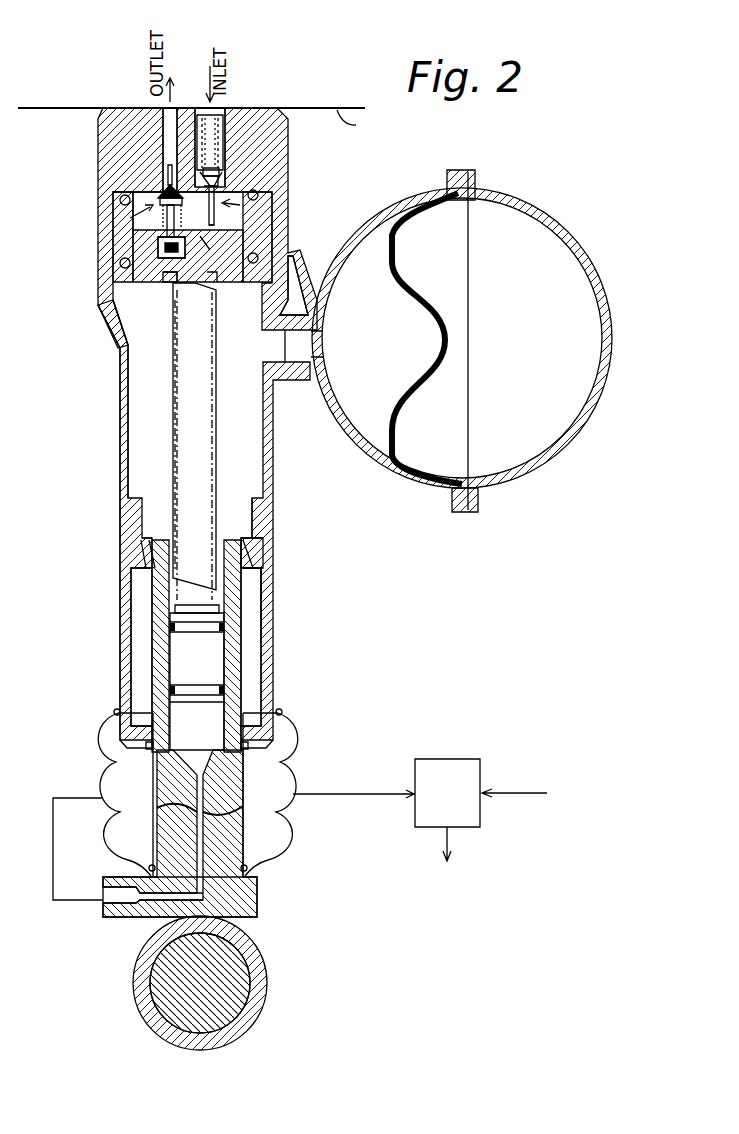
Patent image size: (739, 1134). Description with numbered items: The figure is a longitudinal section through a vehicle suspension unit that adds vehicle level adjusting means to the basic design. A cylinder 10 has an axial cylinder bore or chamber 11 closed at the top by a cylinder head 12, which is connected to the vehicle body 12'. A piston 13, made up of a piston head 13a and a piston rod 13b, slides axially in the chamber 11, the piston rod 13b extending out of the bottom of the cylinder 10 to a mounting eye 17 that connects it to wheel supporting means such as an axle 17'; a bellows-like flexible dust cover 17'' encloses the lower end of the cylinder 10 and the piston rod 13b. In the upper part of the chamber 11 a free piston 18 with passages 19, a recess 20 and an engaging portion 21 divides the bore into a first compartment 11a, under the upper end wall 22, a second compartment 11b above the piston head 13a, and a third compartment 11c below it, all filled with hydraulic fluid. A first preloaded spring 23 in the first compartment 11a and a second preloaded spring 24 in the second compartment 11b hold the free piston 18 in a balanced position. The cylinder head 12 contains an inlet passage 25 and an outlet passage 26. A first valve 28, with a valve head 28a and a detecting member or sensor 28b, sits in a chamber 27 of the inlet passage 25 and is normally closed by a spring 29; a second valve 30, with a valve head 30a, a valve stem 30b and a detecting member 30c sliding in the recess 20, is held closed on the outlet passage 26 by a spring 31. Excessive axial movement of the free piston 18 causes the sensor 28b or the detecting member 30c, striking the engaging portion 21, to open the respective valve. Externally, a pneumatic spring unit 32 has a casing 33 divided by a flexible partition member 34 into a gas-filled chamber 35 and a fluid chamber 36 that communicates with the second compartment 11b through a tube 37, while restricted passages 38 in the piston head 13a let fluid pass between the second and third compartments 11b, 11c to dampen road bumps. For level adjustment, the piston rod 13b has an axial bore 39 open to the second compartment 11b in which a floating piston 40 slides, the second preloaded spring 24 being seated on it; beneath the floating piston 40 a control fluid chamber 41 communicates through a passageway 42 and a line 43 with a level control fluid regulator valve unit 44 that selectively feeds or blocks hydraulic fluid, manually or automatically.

The cylinder 10 is at (106, 496).
The cylinder bore or chamber 11 is at (138, 379).
The first compartment 11a is at (132, 190).
The second compartment 11b is at (148, 405).
The third compartment 11c is at (253, 663).
The cylinder head 12 is at (210, 223).
The vehicle body 12' is at (357, 123).
The piston 13 is at (142, 601).
The piston head 13a is at (258, 558).
The piston rod 13b is at (242, 622).
The mounting eye 17 is at (226, 983).
The axle 17' is at (233, 983).
The bellows-like flexible dust cover 17'' is at (350, 820).
The free piston 18 is at (110, 323).
The passages 19 is at (267, 307).
The recess 20 is at (162, 285).
The engaging portion 21 is at (160, 250).
The upper end wall 22 is at (262, 196).
The first preloaded spring 23 is at (113, 200).
The second preloaded spring 24 is at (173, 452).
The inlet passage 25 is at (212, 108).
The outlet passage 26 is at (170, 108).
The chamber 27 is at (224, 128).
The first valve 28 is at (214, 220).
The valve head 28a is at (218, 171).
The detecting member or sensor 28b is at (280, 228).
The spring 29 is at (222, 147).
The second valve 30 is at (150, 216).
The valve head 30a is at (163, 190).
The valve stem 30b is at (163, 237).
The detecting member 30c is at (165, 272).
The spring 31 is at (206, 240).
The pneumatic spring unit 32 is at (468, 321).
The casing 33 is at (573, 237).
The flexible partition member 34 is at (440, 300).
The chamber 35 is at (518, 344).
The chamber 36 is at (340, 344).
The tube 37 is at (292, 310).
The restricted passages 38 is at (255, 547).
The axial bore 39 is at (168, 570).
The floating piston 40 is at (173, 643).
The control fluid chamber 41 is at (180, 740).
The passageway 42 is at (227, 878).
The line 43 is at (52, 868).
The level control fluid regulator valve unit 44 is at (430, 758).